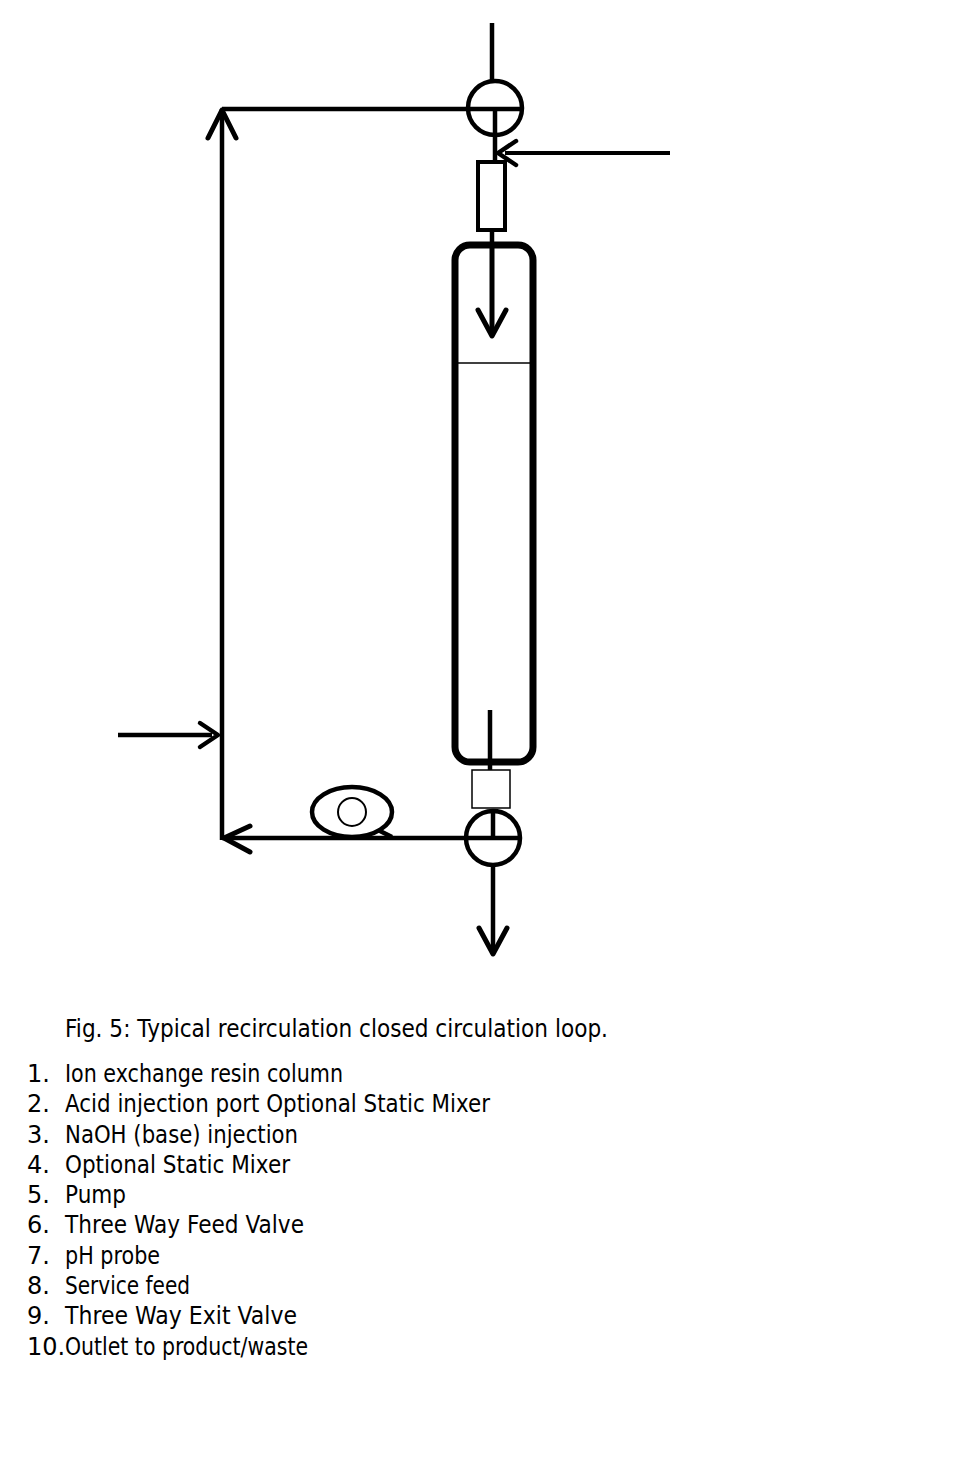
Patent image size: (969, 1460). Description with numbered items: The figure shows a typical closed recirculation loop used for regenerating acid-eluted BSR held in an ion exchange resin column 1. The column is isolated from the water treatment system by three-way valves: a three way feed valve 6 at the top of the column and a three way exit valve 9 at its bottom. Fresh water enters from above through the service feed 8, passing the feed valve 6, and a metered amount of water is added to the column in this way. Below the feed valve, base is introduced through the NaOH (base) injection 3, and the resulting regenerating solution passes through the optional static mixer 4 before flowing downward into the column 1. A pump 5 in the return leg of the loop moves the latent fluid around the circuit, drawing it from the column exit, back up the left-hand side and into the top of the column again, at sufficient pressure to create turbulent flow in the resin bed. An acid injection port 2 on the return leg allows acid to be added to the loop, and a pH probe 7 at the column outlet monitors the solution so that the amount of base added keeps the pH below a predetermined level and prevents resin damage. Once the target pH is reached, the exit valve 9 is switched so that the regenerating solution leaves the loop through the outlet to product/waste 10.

The ion exchange resin column 1 is at (494, 507).
The acid injection port 2 is at (149, 734).
The NaOH (base) injection 3 is at (610, 159).
The optional static mixer 4 is at (515, 196).
The pump 5 is at (352, 790).
The three way feed valve 6 is at (512, 107).
The pH probe 7 is at (512, 788).
The service feed 8 is at (467, 46).
The three way exit valve 9 is at (517, 838).
The outlet to product/waste 10 is at (527, 927).